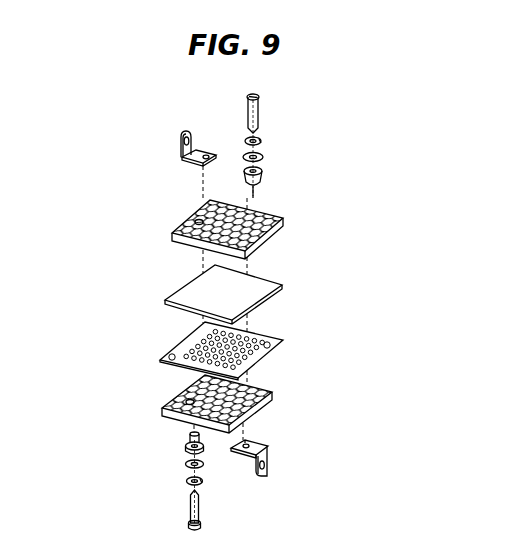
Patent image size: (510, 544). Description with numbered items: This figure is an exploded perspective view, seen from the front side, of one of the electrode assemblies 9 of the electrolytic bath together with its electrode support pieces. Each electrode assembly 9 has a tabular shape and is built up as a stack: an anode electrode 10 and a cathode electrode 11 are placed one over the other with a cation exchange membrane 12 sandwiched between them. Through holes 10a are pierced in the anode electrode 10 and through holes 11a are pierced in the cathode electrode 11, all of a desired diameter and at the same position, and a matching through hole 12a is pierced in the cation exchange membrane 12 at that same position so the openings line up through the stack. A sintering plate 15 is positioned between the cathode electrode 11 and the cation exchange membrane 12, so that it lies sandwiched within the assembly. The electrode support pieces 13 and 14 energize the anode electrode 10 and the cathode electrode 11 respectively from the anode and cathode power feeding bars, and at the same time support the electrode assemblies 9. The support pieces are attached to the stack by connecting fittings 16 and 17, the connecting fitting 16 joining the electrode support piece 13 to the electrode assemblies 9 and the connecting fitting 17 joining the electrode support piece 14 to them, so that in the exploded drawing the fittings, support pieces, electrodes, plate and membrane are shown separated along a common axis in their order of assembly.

The electrode assembly 9 is at (338, 272).
The anode electrode 10 is at (270, 410).
The through holes 10a is at (185, 400).
The cathode electrode 11 is at (263, 247).
The through holes 11a is at (195, 220).
The cation exchange membrane 12 is at (278, 351).
The through hole 12a is at (257, 332).
The electrode support piece 13 is at (266, 460).
The electrode support piece 14 is at (180, 152).
The sintering plate 15 is at (197, 281).
The connecting fitting 16 is at (160, 433).
The connecting fitting 17 is at (272, 93).